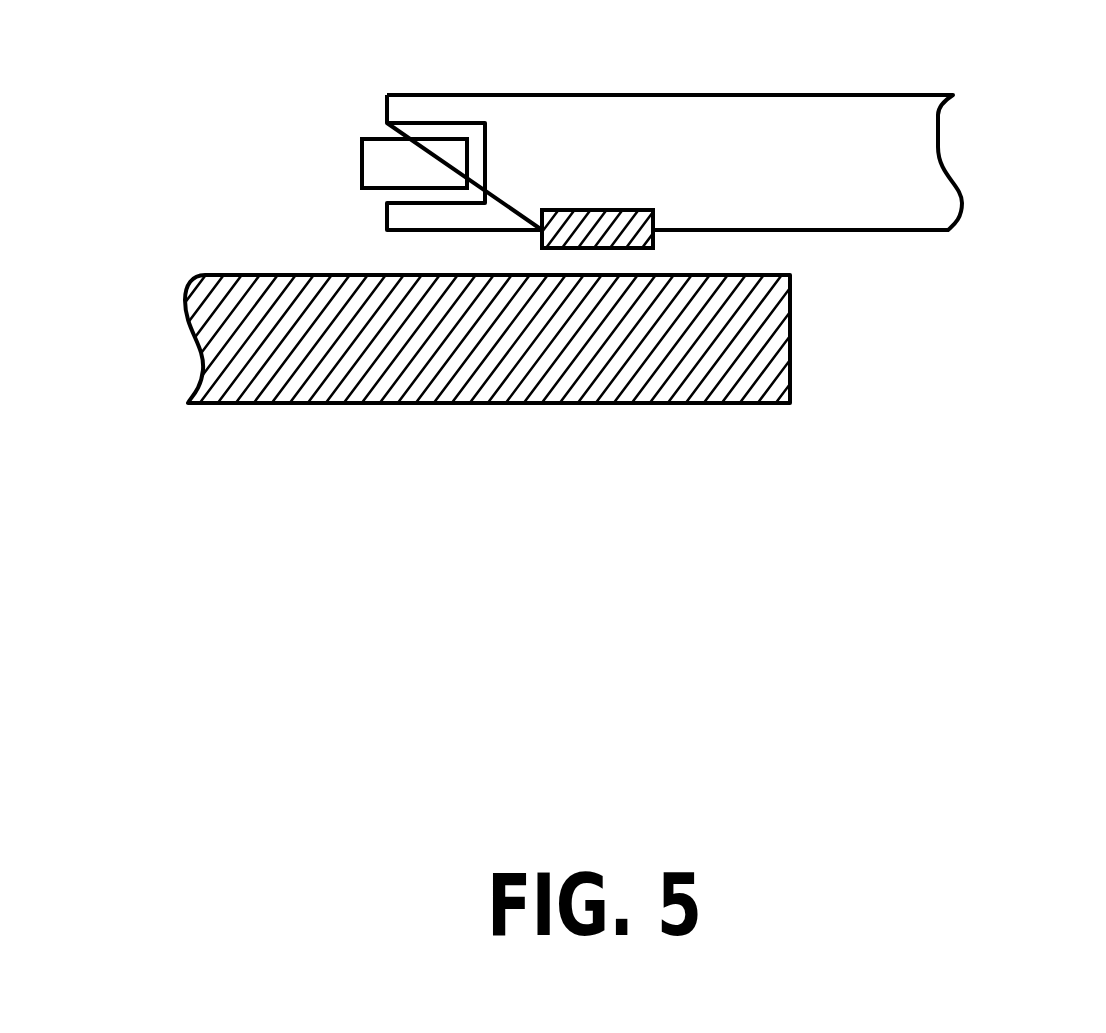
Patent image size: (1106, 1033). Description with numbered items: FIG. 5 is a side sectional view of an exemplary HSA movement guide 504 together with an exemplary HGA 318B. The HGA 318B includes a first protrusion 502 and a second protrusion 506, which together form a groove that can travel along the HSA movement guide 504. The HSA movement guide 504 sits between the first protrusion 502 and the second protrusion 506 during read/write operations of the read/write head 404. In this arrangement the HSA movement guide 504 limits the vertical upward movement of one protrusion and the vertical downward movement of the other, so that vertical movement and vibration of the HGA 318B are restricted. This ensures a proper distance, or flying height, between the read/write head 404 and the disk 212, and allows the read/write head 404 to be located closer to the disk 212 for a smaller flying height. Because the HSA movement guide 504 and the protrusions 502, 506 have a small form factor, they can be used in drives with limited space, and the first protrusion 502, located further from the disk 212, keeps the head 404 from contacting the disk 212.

The HGA 318B is at (878, 182).
The first protrusion 502 is at (385, 106).
The HSA movement guide 504 is at (362, 160).
The second protrusion 506 is at (385, 216).
The read/write head 404 is at (597, 210).
The disk 212 is at (795, 337).